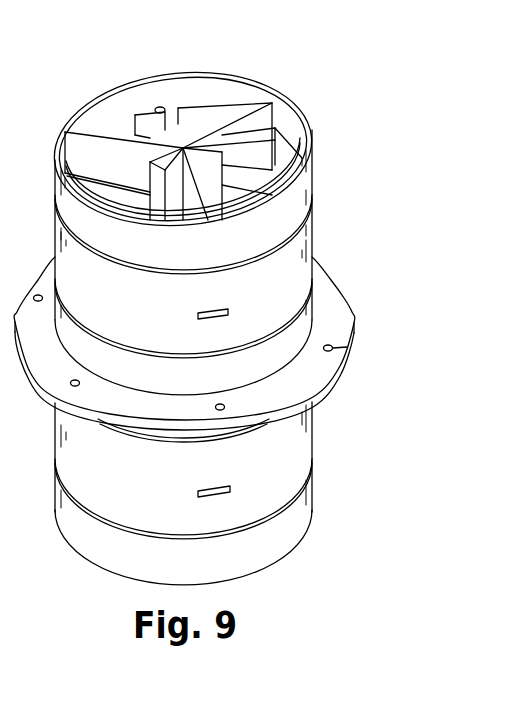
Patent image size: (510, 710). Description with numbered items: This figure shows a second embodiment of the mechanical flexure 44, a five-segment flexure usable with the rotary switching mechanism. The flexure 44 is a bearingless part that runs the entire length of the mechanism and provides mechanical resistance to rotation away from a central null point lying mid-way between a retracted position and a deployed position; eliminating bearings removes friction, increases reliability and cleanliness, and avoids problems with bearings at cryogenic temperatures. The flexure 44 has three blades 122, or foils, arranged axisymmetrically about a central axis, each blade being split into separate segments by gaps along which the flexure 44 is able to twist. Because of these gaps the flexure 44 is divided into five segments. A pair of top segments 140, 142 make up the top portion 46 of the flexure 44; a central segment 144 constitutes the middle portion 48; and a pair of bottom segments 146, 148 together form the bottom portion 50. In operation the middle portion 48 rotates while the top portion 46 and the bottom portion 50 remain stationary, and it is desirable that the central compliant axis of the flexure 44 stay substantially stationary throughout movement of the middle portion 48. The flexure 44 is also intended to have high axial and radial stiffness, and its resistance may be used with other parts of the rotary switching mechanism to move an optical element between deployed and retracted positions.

The mechanical flexure 44 is at (305, 80).
The blades 122 is at (221, 79).
The top segment 140 is at (318, 165).
The top portion 46 is at (333, 176).
The top segment 142 is at (302, 280).
The central segment 144 is at (283, 342).
The middle portion 48 is at (368, 322).
The bottom segment 146 is at (290, 444).
The bottom portion 50 is at (349, 451).
The bottom segment 148 is at (285, 526).